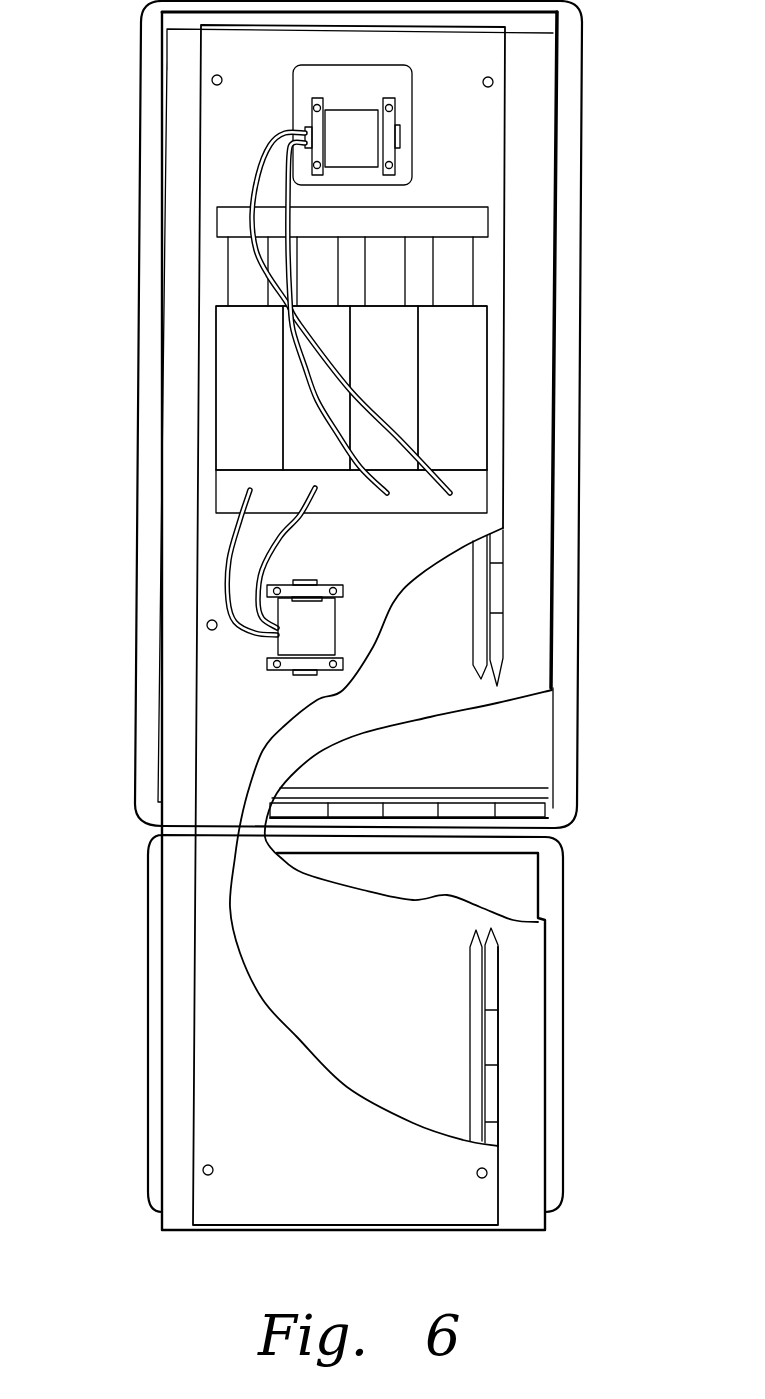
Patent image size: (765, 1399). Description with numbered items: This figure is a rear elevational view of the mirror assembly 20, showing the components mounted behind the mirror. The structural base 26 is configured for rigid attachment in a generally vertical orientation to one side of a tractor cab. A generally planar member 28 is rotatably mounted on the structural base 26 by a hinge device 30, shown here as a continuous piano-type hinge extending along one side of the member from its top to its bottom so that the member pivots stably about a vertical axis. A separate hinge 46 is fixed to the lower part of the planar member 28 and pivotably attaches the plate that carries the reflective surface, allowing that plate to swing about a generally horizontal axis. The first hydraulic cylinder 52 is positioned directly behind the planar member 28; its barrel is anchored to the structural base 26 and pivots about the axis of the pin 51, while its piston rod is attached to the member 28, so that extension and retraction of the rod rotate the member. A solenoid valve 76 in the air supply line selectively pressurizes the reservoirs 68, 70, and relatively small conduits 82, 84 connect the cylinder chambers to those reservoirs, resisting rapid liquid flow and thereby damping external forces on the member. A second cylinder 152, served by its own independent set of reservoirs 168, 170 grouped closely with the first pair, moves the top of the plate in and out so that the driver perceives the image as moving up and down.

The mirror assembly 20 is at (617, 472).
The structural base 26 is at (321, 1167).
The generally planar member 28 is at (523, 637).
The hinge device 30 is at (502, 1040).
The hinge 46 is at (548, 810).
The pin 51 is at (305, 676).
The first hydraulic cylinder 52 is at (277, 637).
The reservoir 68 is at (268, 399).
The reservoir 70 is at (331, 462).
The solenoid valve 76 is at (248, 277).
The conduit 82 is at (232, 533).
The conduit 84 is at (288, 535).
The second cylinder 152 is at (357, 107).
The reservoir 168 is at (411, 369).
The reservoir 170 is at (483, 392).